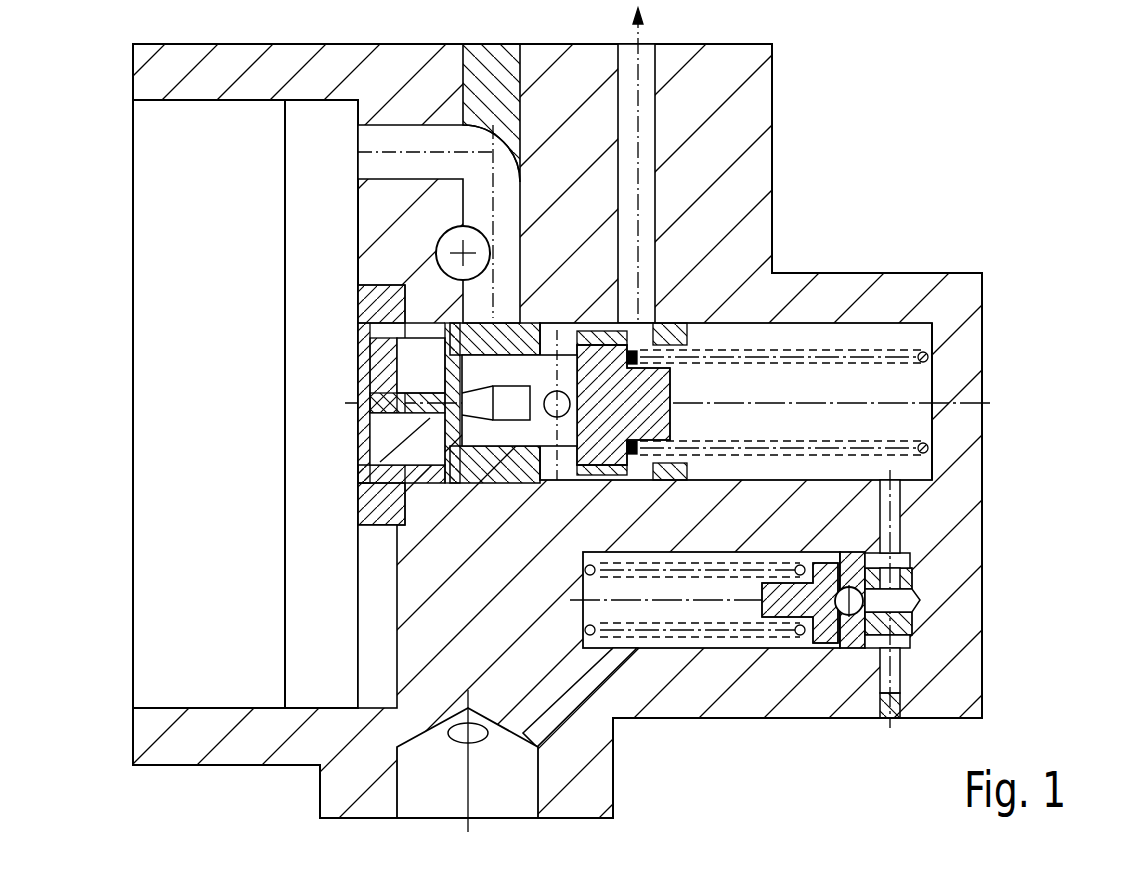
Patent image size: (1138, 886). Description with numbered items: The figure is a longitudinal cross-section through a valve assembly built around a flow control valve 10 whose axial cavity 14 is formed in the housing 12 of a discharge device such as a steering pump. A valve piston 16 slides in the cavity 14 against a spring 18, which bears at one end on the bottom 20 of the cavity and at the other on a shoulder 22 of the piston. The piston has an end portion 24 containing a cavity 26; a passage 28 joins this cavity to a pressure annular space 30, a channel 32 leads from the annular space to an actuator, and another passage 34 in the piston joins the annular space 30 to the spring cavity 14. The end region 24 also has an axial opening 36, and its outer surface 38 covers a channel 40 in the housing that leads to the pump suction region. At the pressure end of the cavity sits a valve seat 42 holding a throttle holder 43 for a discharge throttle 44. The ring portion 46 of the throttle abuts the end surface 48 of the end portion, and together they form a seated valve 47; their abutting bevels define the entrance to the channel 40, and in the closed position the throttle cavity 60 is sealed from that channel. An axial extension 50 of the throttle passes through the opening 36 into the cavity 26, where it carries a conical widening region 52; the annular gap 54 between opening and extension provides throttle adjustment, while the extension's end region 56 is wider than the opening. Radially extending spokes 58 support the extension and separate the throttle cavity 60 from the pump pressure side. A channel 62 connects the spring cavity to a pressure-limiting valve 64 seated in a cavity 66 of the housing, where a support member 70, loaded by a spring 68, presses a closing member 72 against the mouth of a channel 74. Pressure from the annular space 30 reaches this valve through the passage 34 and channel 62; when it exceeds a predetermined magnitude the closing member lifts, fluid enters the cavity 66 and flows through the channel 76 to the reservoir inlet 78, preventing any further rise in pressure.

The flow control valve 10 is at (902, 152).
The housing 12 is at (948, 300).
The axial cavity 14 is at (910, 383).
The valve piston 16 is at (800, 323).
The spring 18 is at (933, 358).
The bottom of the cavity 20 is at (933, 422).
The shoulder 22 is at (660, 320).
The end portion 24 is at (615, 262).
The cavity 26 is at (519, 400).
The passage 28 is at (545, 470).
The pressure annular space 30 is at (617, 290).
The channel 32 is at (643, 125).
The passage 34 is at (641, 462).
The axial opening 36 is at (455, 484).
The outer surface 38 is at (535, 320).
The channel 40 is at (400, 150).
The valve seat 42 is at (360, 290).
The throttle holder 43 is at (373, 320).
The discharge throttle 44 is at (373, 314).
The ring portion 46 is at (448, 330).
The seated valve 47 is at (371, 349).
The end surface 48 is at (371, 377).
The axial extension 50 is at (371, 445).
The conical widening region 52 is at (478, 484).
The annular gap 54 is at (422, 483).
The end region 56 is at (507, 440).
The spokes 58 is at (379, 424).
The throttle cavity 60 is at (371, 495).
The channel 62 is at (898, 523).
The pressure-limiting valve 64 is at (952, 620).
The cavity 66 is at (716, 640).
The spring 68 is at (803, 642).
The support member 70 is at (846, 618).
The closing member 72 is at (858, 650).
The channel 74 is at (855, 613).
The channel 76 is at (595, 672).
The reservoir inlet 78 is at (516, 800).